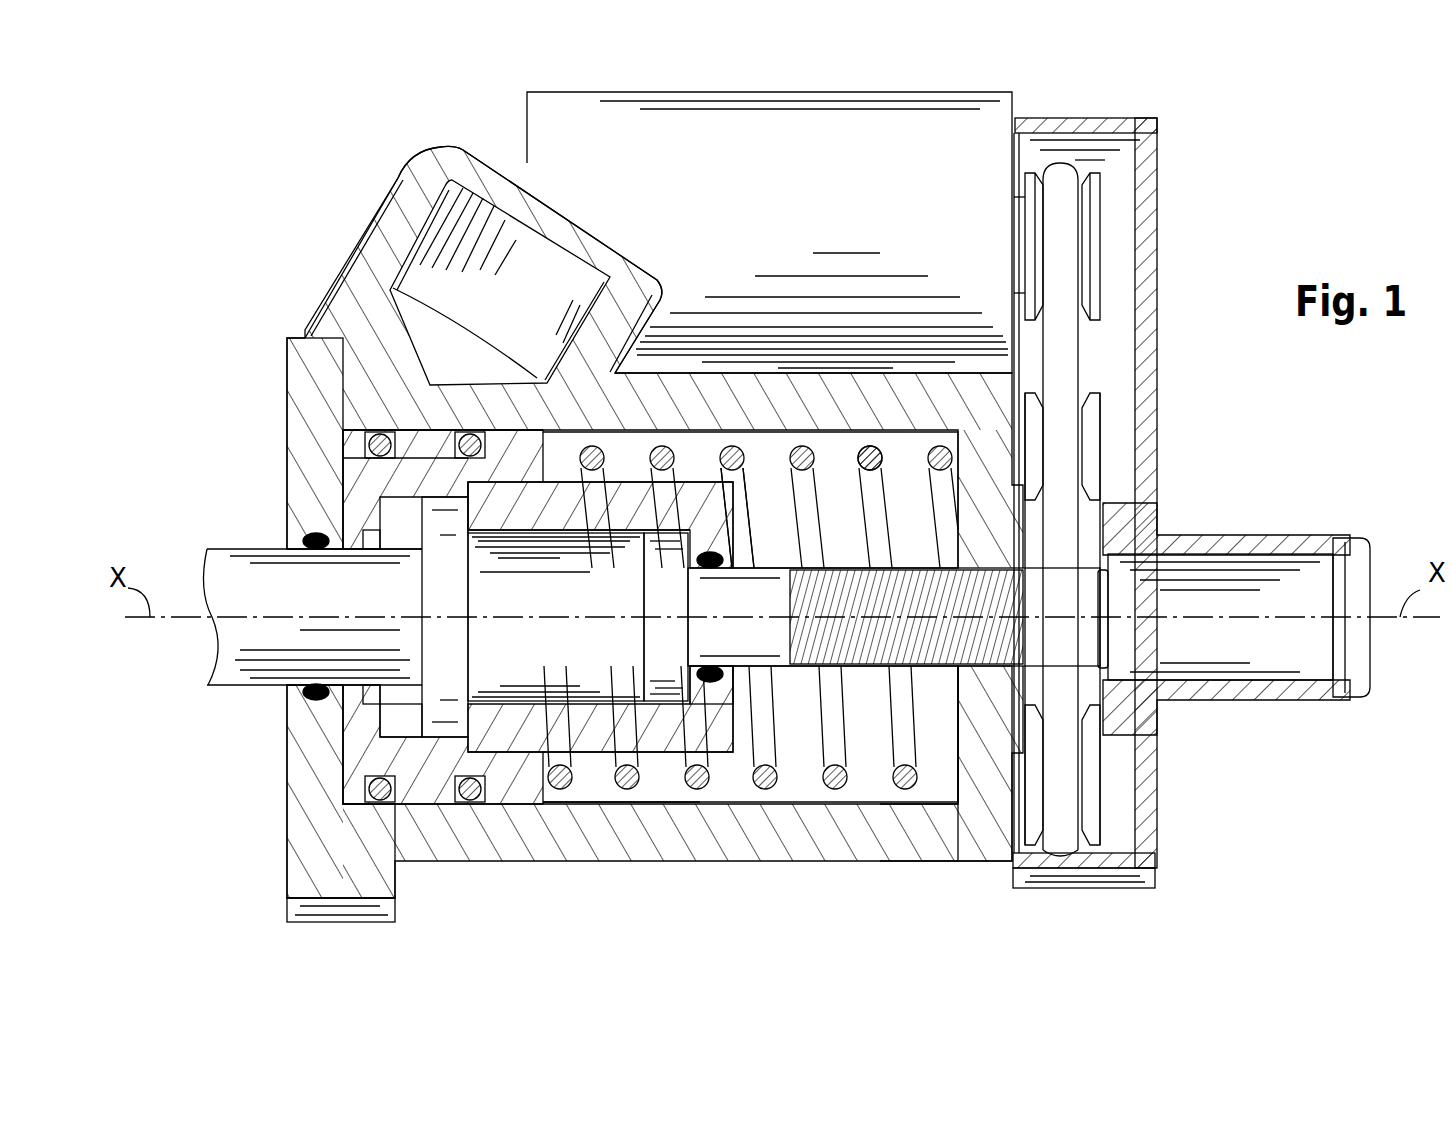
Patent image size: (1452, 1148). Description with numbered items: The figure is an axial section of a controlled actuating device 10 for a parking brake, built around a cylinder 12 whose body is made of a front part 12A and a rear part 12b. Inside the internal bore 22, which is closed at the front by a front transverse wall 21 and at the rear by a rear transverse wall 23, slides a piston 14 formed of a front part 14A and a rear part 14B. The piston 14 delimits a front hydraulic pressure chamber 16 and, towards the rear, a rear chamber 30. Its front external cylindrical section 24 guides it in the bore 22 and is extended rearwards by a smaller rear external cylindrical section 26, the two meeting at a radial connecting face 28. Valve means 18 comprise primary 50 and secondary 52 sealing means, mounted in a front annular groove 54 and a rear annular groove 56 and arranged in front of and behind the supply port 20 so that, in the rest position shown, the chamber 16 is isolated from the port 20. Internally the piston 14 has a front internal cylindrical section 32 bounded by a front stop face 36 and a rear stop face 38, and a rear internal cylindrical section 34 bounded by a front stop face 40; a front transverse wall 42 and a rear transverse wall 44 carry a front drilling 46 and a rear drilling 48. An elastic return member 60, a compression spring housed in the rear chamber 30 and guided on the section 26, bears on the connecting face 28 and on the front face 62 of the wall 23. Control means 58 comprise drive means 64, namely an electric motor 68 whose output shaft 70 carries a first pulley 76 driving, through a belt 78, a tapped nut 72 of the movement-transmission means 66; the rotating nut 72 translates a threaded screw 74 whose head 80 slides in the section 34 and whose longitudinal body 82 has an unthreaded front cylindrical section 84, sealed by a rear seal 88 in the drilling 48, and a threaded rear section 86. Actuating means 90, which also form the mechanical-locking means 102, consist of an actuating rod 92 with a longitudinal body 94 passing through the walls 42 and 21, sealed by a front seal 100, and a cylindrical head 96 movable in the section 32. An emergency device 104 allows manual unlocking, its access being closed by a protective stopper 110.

The controlled actuating device 10 is at (1225, 178).
The cylinder 12 is at (668, 862).
The front part of the cylinder 12A is at (312, 540).
The rear part of the cylinder 12b is at (913, 835).
The piston 14 is at (497, 568).
The front part of the piston 14A is at (360, 775).
The rear part of the piston 14B is at (702, 505).
The front hydraulic pressure chamber 16 is at (330, 477).
The valve means 18 is at (410, 817).
The pressurized hydraulic fluid supply port 20 is at (385, 335).
The front transverse wall 21 is at (320, 423).
The internal bore 22 is at (788, 790).
The rear transverse wall 23 is at (990, 460).
The front external cylindrical section 24 is at (455, 790).
The rear external cylindrical section 26 is at (588, 780).
The connecting face 28 is at (533, 385).
The rear chamber 30 is at (965, 750).
The front internal cylindrical section 32 is at (357, 760).
The rear internal cylindrical section 34 is at (585, 540).
The front stop face 36 is at (322, 513).
The rear stop face 38 is at (478, 465).
The front stop face 40 is at (894, 750).
The front transverse wall 42 is at (357, 713).
The rear transverse wall 44 is at (747, 703).
The front drilling 46 is at (373, 550).
The rear drilling 48 is at (735, 582).
The primary sealing means 50 is at (345, 430).
The secondary sealing means 52 is at (478, 432).
The front annular groove 54 is at (373, 457).
The rear annular groove 56 is at (533, 497).
The control means 58 is at (725, 705).
The elastic return member 60 is at (870, 455).
The front face 62 is at (948, 760).
The drive means 64 is at (1120, 200).
The movement-transmission means 66 is at (1113, 537).
The electric motor 68 is at (769, 232).
The output shaft 70 is at (1018, 212).
The tapped nut 72 is at (1050, 737).
The threaded screw 74 is at (862, 690).
The first pulley 76 is at (1110, 255).
The belt 78 is at (1062, 350).
The head 80 is at (660, 590).
The longitudinal body 82 is at (690, 608).
The front cylindrical section 84 is at (785, 600).
The threaded rear cylindrical section 86 is at (925, 597).
The rear seal 88 is at (705, 668).
The actuating means 90 is at (270, 633).
The actuating rod 92 is at (357, 633).
The longitudinal body 94 is at (212, 637).
The cylindrical head 96 is at (450, 663).
The front seal 100 is at (316, 550).
The mechanical-locking means 102 is at (1123, 638).
The emergency device 104 is at (1120, 600).
The protective stopper 110 is at (1368, 660).